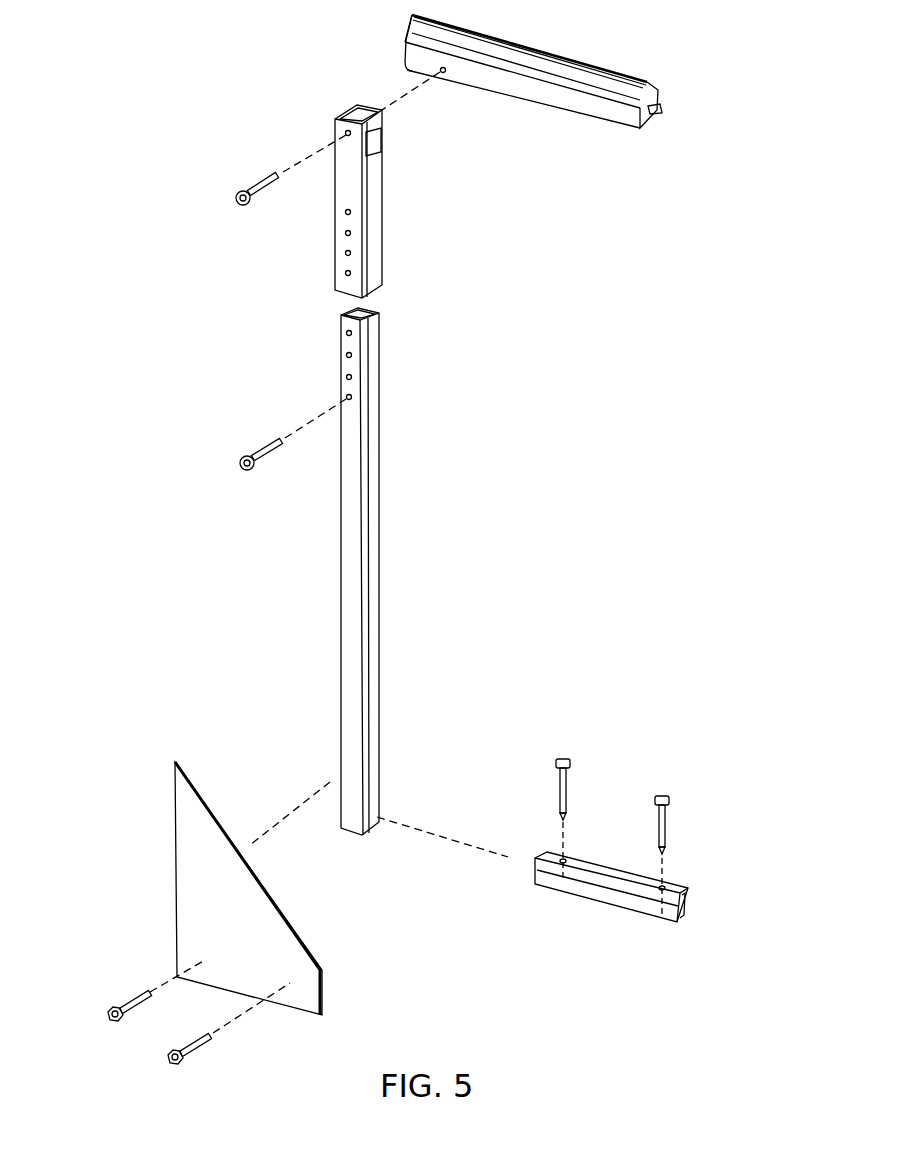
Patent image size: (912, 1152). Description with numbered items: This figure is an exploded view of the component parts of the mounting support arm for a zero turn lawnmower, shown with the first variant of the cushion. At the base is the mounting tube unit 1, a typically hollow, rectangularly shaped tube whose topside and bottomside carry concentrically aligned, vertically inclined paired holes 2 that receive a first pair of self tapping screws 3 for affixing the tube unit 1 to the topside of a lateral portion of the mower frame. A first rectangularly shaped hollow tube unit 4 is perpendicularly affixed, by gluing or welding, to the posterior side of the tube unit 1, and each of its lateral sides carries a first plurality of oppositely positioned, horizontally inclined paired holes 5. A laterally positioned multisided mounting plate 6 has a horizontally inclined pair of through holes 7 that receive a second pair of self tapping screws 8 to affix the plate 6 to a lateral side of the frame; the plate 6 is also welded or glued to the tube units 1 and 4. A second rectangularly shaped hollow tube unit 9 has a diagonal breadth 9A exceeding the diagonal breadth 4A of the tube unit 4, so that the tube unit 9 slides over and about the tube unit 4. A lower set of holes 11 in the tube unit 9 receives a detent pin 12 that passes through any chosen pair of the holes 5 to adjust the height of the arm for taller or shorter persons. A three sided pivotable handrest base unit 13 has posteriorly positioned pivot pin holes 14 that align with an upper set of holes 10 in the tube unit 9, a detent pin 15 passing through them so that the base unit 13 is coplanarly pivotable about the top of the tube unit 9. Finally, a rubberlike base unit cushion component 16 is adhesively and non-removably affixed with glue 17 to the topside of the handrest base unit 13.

The mounting tube unit 1 is at (600, 890).
The paired holes 2 is at (558, 852).
The first pair of self tapping screws 3 is at (572, 787).
The first rectangularly shaped hollow tube unit 4 is at (368, 592).
The diagonal breadth 4A is at (350, 316).
The first plurality of paired holes 5 is at (356, 335).
The multisided mounting plate 6 is at (215, 862).
The through holes 7 is at (205, 960).
The second pair of self tapping screws 8 is at (120, 998).
The second rectangularly shaped hollow tube unit 9 is at (372, 218).
The diagonal breadth 9A is at (358, 108).
The upper set of holes 10 is at (340, 127).
The lower set of holes 11 is at (343, 214).
The detent pin 12 is at (255, 445).
The pivotable handrest base unit 13 is at (560, 105).
The pivot pin holes 14 is at (448, 77).
The detent pin 15 is at (258, 178).
The base unit cushion component 16 is at (585, 62).
The glue 17 is at (647, 110).